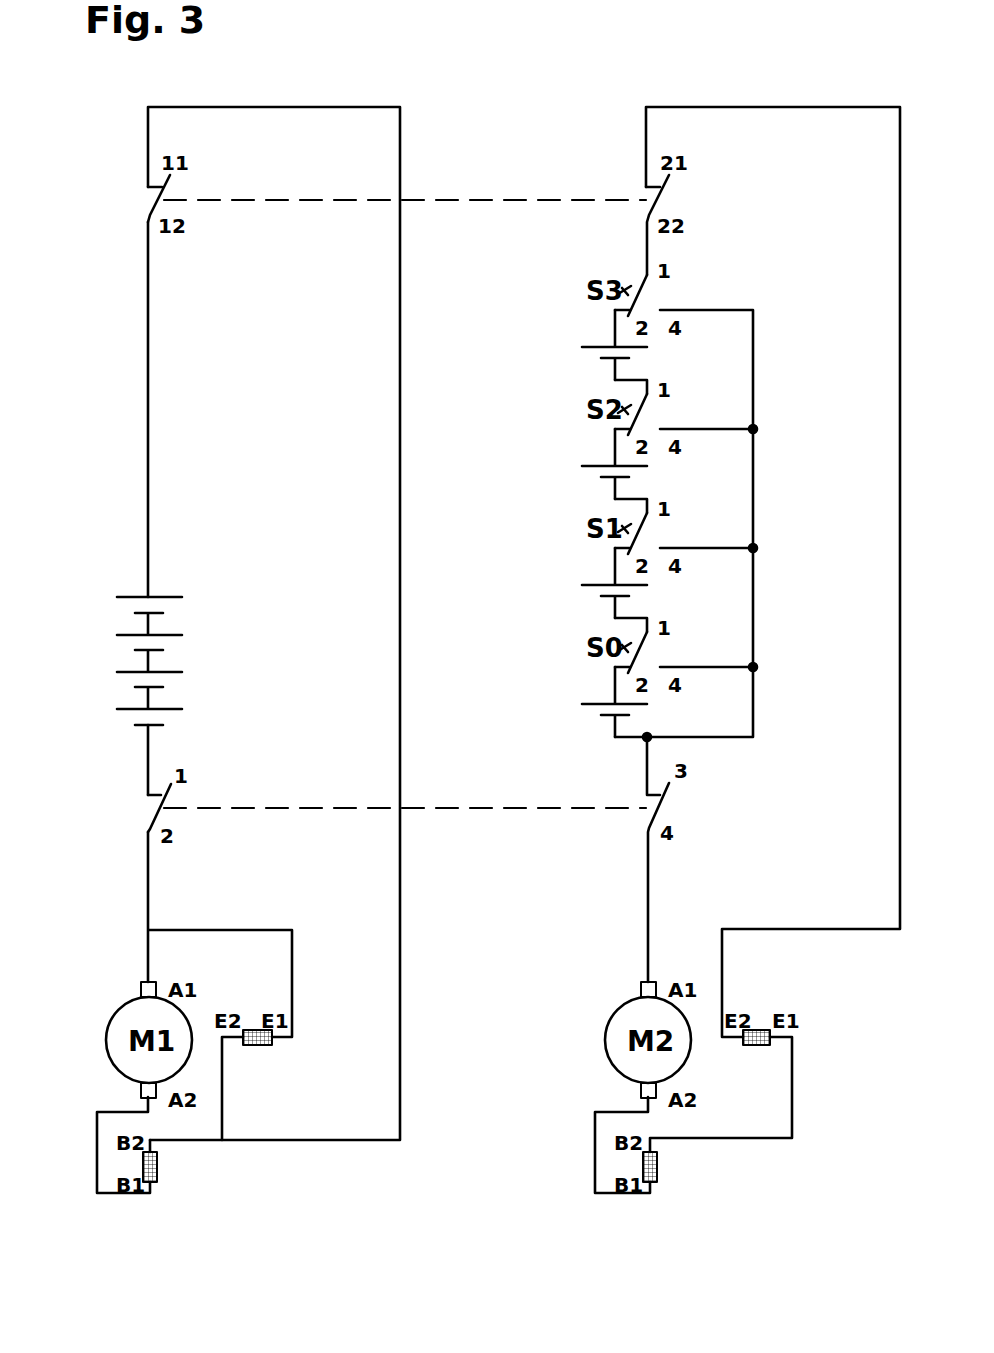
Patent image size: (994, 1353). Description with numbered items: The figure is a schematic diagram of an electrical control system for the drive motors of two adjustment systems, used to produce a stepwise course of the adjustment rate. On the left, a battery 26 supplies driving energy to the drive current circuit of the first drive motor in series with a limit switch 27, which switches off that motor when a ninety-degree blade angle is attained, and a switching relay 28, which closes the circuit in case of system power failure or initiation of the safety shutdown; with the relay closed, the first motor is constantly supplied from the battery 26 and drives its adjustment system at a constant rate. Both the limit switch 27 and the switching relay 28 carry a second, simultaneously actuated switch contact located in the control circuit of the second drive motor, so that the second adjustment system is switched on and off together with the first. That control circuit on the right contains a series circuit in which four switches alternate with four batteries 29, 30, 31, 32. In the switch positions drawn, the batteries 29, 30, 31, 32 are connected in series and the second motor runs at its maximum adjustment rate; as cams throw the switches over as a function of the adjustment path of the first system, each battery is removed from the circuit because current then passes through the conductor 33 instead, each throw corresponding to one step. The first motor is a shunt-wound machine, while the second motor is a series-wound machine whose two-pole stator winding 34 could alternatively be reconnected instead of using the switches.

The battery 26 is at (106, 655).
The limit switch 27 is at (151, 814).
The switching relay 28 is at (150, 205).
The battery 29 is at (592, 703).
The battery 30 is at (592, 584).
The battery 31 is at (592, 465).
The battery 32 is at (592, 346).
The conductor 33 is at (755, 700).
The two-pole stator winding 34 is at (688, 1165).